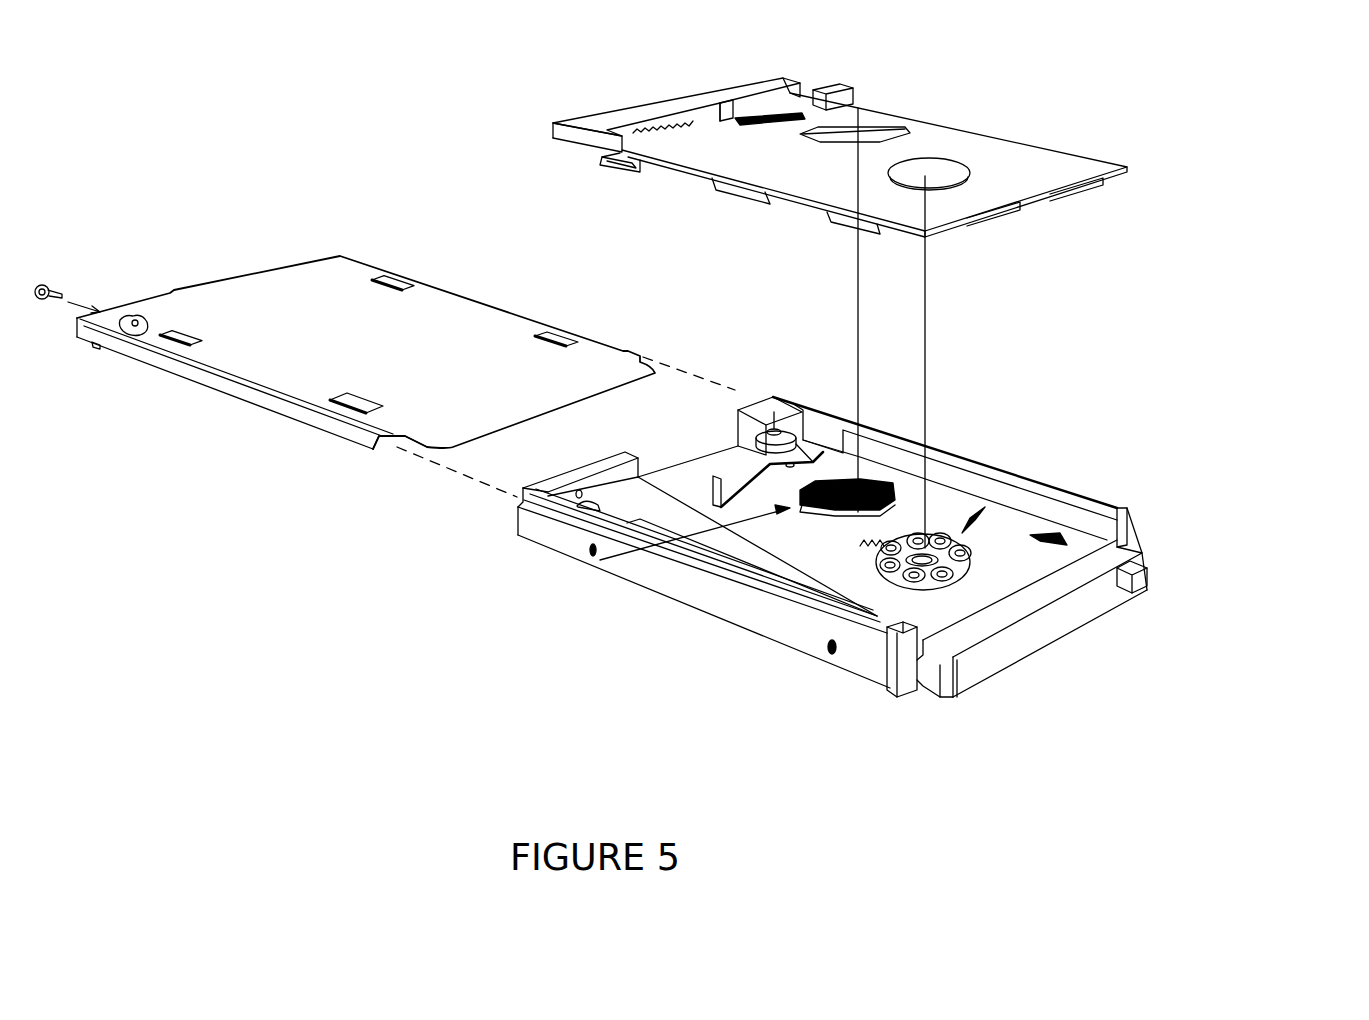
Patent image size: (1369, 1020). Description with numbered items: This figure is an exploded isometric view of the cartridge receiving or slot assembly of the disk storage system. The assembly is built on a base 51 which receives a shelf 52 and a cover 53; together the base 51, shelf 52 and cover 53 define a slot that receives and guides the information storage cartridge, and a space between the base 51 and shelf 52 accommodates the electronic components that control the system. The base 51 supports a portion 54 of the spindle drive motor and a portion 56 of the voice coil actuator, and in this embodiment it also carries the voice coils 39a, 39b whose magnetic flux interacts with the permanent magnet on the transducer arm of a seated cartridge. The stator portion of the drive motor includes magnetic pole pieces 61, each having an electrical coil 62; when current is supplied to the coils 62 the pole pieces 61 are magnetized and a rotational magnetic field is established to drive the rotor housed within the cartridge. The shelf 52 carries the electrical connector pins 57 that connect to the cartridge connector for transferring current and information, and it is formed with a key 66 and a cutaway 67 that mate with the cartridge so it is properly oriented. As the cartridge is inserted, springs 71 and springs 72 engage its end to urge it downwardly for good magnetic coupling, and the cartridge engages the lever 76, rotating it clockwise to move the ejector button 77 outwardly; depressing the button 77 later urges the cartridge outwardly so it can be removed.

The base 51 is at (706, 600).
The shelf 52 is at (1002, 162).
The cover 53 is at (300, 298).
The portion of the spindle drive motor 54 is at (970, 545).
The portion of the voice coil actuator 56 is at (598, 553).
The electrical connector pins 57 is at (673, 122).
The magnetic pole pieces 61 is at (962, 533).
The electrical coil 62 is at (980, 543).
The key 66 is at (830, 92).
The cutaway 67 is at (627, 150).
The springs 71 is at (335, 400).
The springs 72 is at (150, 340).
The lever 76 is at (733, 487).
The ejector button 77 is at (1150, 580).
The voice coil 39a is at (866, 505).
The voice coil 39b is at (832, 478).